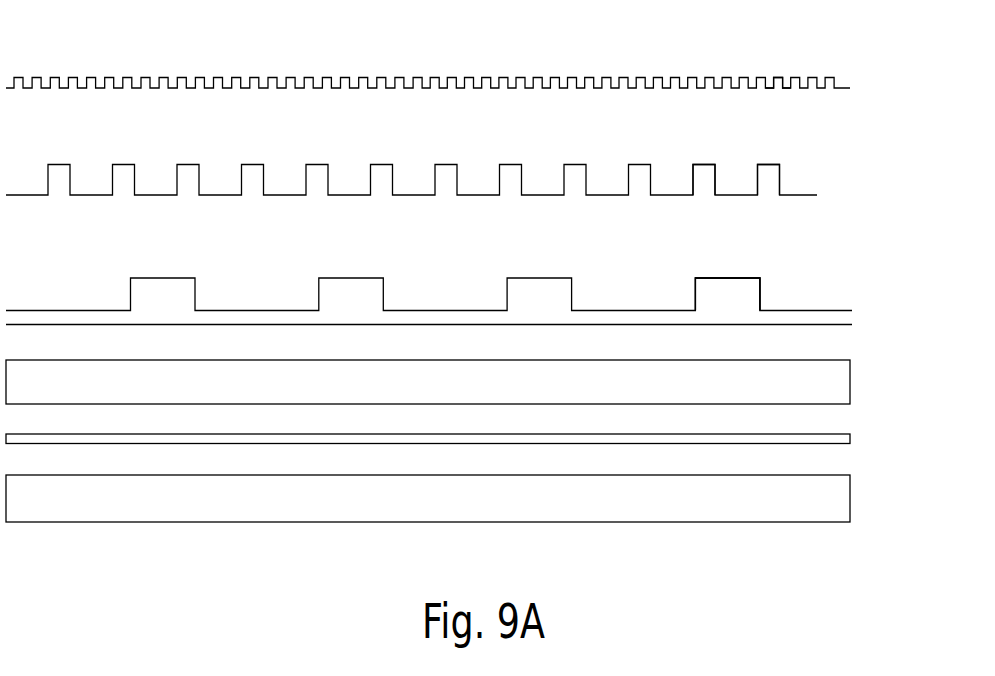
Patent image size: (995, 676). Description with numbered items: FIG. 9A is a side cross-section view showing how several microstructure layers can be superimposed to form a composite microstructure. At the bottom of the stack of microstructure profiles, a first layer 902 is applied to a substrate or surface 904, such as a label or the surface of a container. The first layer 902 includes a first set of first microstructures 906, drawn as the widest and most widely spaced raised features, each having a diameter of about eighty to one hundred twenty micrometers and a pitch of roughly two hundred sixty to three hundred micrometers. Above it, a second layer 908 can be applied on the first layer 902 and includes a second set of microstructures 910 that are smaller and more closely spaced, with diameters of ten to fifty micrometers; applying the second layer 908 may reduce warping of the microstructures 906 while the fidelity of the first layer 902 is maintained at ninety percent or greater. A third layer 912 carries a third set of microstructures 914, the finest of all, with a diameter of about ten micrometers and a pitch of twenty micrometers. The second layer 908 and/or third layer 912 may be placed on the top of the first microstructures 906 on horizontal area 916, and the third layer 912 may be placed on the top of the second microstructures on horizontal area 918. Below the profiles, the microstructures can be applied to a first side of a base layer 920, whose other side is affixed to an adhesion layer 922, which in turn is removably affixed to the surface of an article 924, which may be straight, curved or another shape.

The first layer 902 is at (845, 311).
The substrate or surface 904 is at (852, 324).
The first set of first microstructures 906 is at (758, 278).
The second layer 908 is at (805, 195).
The second set of microstructures 910 is at (777, 165).
The third layer 912 is at (843, 84).
The third set of microstructures 914 is at (775, 80).
The horizontal area 916 is at (713, 278).
The horizontal area 918 is at (705, 163).
The base layer 920 is at (850, 375).
The adhesion layer 922 is at (850, 437).
The surface of an article 924 is at (850, 488).